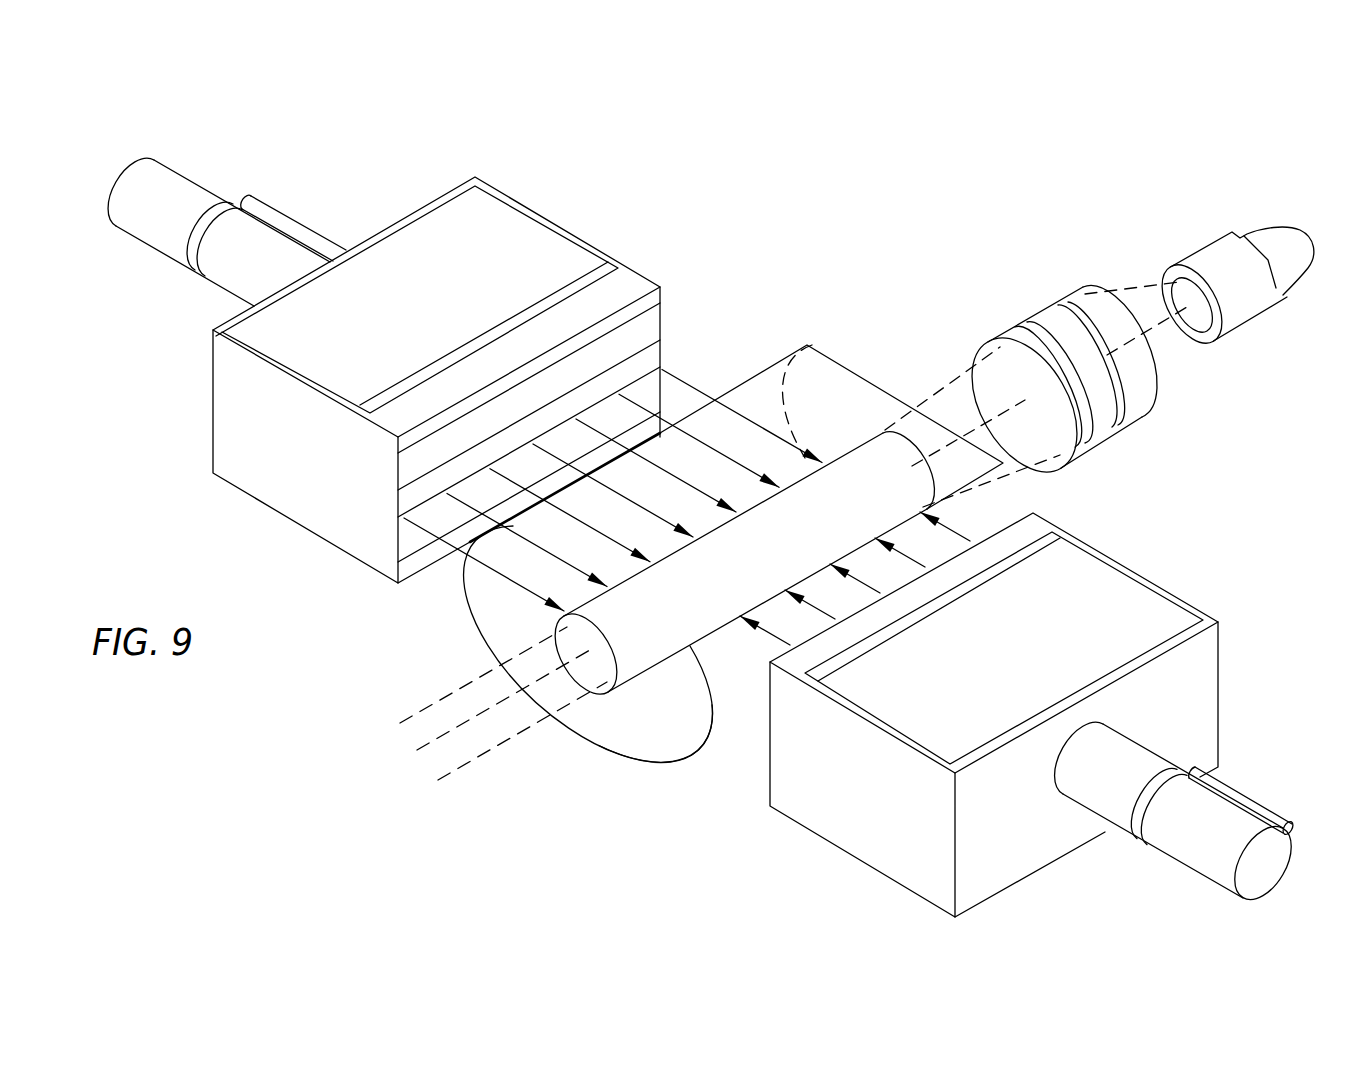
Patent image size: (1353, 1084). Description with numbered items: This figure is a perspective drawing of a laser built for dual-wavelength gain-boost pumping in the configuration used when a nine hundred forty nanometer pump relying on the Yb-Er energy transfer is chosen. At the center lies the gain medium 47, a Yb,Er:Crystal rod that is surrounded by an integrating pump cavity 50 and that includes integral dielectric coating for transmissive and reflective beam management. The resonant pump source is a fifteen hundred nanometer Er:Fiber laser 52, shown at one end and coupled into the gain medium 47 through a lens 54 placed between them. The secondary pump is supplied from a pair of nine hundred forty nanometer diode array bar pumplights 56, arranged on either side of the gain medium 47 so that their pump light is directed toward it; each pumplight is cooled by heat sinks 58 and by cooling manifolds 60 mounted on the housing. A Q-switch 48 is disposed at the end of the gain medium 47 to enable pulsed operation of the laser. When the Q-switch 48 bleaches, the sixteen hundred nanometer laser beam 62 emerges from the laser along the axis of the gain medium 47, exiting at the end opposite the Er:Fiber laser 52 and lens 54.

The gain medium 47 is at (845, 455).
The Q-switch 48 is at (648, 732).
The integrating pump cavity 50 is at (708, 744).
The Er:Fiber laser 52 is at (1278, 232).
The lens 54 is at (1043, 307).
The diode array bar pumplights 56 is at (661, 290).
The heat sinks 58 is at (508, 215).
The cooling manifolds 60 is at (192, 270).
The laser beam 62 is at (394, 766).